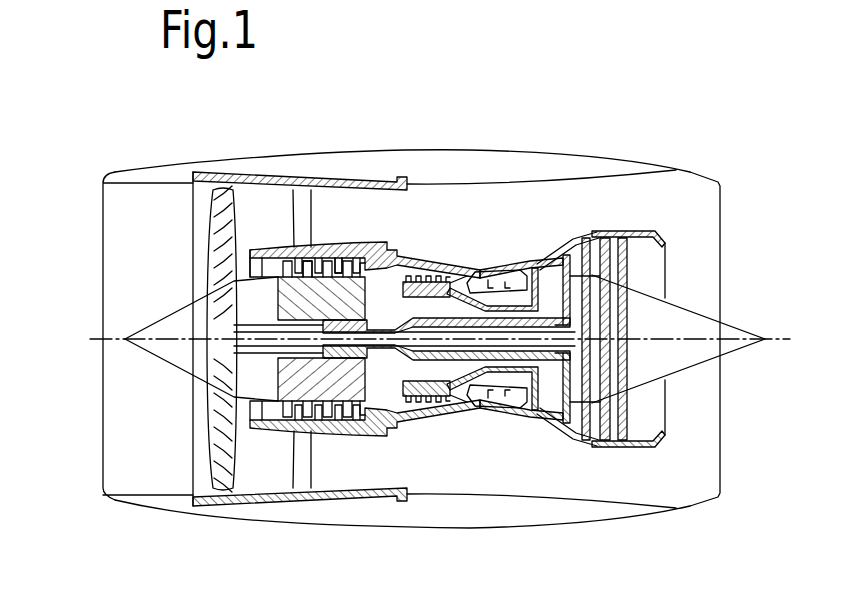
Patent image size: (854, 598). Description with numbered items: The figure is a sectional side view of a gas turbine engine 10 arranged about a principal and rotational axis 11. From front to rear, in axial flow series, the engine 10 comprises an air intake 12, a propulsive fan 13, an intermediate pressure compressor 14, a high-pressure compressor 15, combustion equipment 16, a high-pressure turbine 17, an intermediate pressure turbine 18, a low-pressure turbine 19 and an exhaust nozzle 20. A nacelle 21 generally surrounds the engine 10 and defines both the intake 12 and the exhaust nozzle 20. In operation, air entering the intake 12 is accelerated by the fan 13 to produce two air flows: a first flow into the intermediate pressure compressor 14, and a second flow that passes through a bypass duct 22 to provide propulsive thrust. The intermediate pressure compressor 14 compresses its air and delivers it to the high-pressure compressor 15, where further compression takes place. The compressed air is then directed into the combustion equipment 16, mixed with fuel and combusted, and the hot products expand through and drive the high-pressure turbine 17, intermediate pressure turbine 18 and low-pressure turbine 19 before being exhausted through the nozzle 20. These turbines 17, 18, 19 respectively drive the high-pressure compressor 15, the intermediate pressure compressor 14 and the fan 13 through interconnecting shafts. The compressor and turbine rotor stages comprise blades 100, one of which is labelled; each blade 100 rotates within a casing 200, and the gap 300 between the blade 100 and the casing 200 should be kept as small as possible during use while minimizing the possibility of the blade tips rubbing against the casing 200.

The gas turbine engine 10 is at (96, 198).
The principal and rotational axis 11 is at (104, 330).
The air intake 12 is at (165, 183).
The propulsive fan 13 is at (218, 463).
The intermediate pressure compressor 14 is at (317, 402).
The high-pressure compressor 15 is at (437, 280).
The combustion equipment 16 is at (490, 395).
The high-pressure turbine 17 is at (537, 417).
The intermediate pressure turbine 18 is at (566, 248).
The low-pressure turbine 19 is at (583, 424).
The exhaust nozzle 20 is at (722, 457).
The nacelle 21 is at (455, 152).
The bypass duct 22 is at (392, 232).
The blade 100 is at (320, 255).
The casing 200 is at (283, 247).
The gap 300 is at (337, 250).